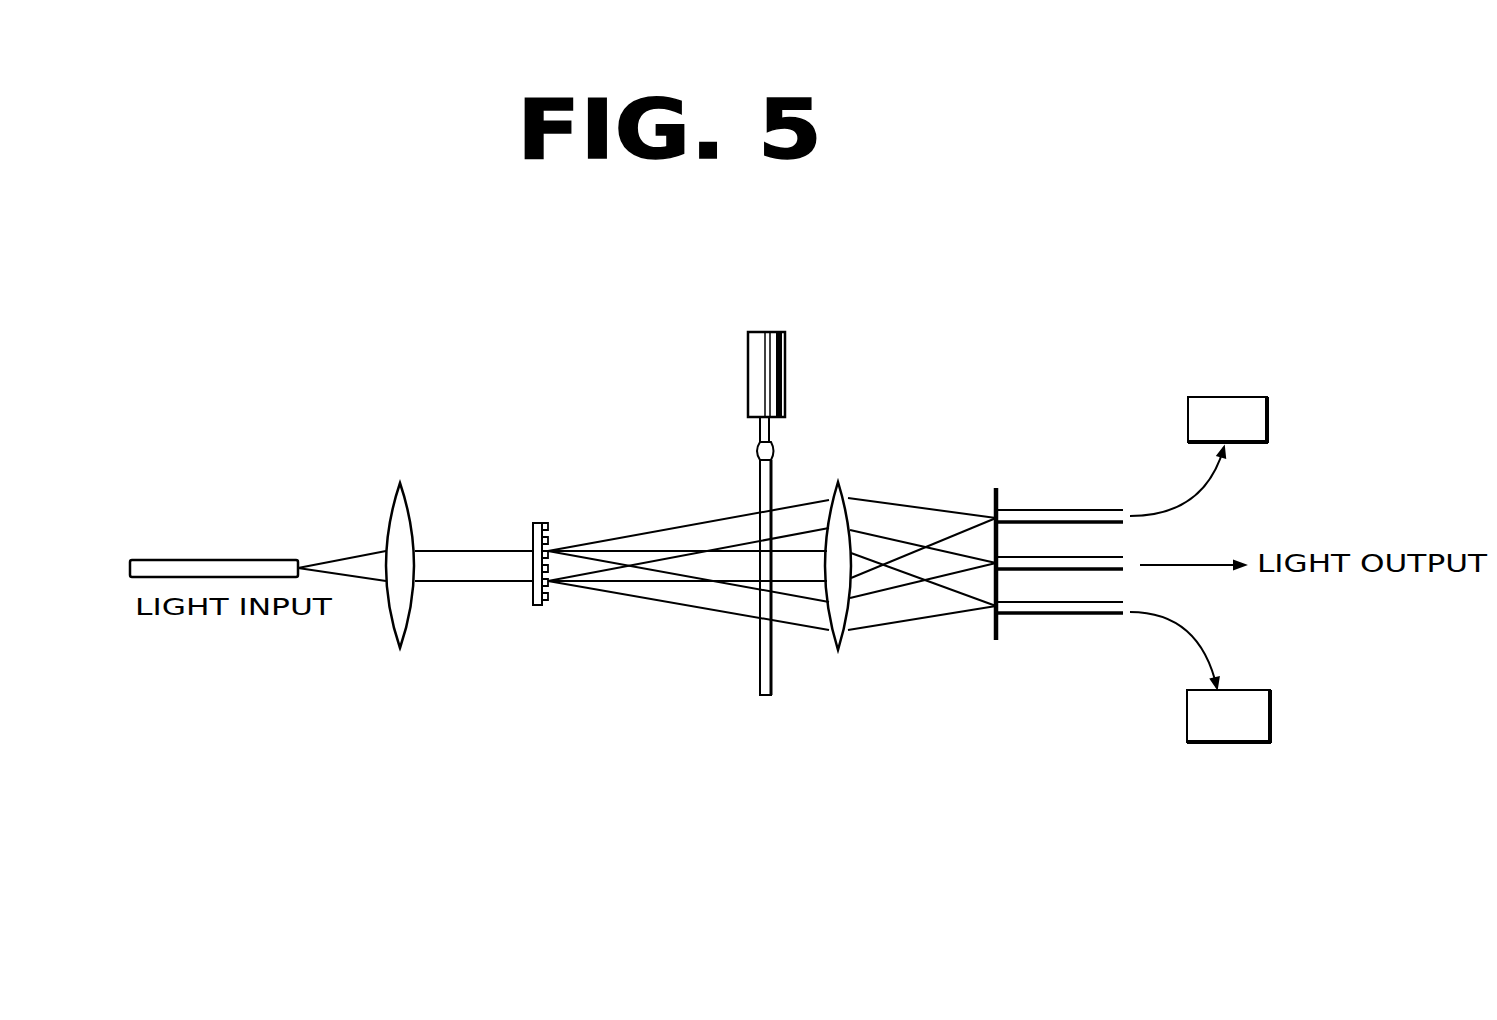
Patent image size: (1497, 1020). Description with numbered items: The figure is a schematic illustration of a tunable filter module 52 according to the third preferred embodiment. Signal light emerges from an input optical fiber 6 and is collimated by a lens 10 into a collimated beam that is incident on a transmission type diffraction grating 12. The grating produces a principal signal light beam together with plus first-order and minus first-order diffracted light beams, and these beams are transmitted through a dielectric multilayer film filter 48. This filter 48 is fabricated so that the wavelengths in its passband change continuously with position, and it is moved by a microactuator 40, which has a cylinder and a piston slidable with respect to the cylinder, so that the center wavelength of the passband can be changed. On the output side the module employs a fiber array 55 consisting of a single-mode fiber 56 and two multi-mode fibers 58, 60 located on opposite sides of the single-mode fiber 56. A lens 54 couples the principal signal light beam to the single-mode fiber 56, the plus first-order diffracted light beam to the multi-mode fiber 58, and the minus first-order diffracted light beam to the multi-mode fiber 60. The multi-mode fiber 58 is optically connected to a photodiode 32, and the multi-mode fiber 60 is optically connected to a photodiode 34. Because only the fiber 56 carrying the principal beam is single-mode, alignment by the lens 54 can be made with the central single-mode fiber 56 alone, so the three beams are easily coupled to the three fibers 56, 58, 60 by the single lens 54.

The input optical fiber 6 is at (244, 560).
The lens 10 is at (398, 500).
The transmission type diffraction grating 12 is at (535, 523).
The microactuator 40 is at (748, 322).
The tunable filter module 52 is at (740, 440).
The dielectric multilayer film filter 48 is at (760, 660).
The lens 54 is at (840, 485).
The fiber array 55 is at (1028, 500).
The multi-mode fiber 58 is at (1088, 510).
The single-mode fiber 56 is at (1097, 572).
The multi-mode fiber 60 is at (1035, 616).
The photodiode 32 is at (1226, 395).
The photodiode 34 is at (1227, 745).